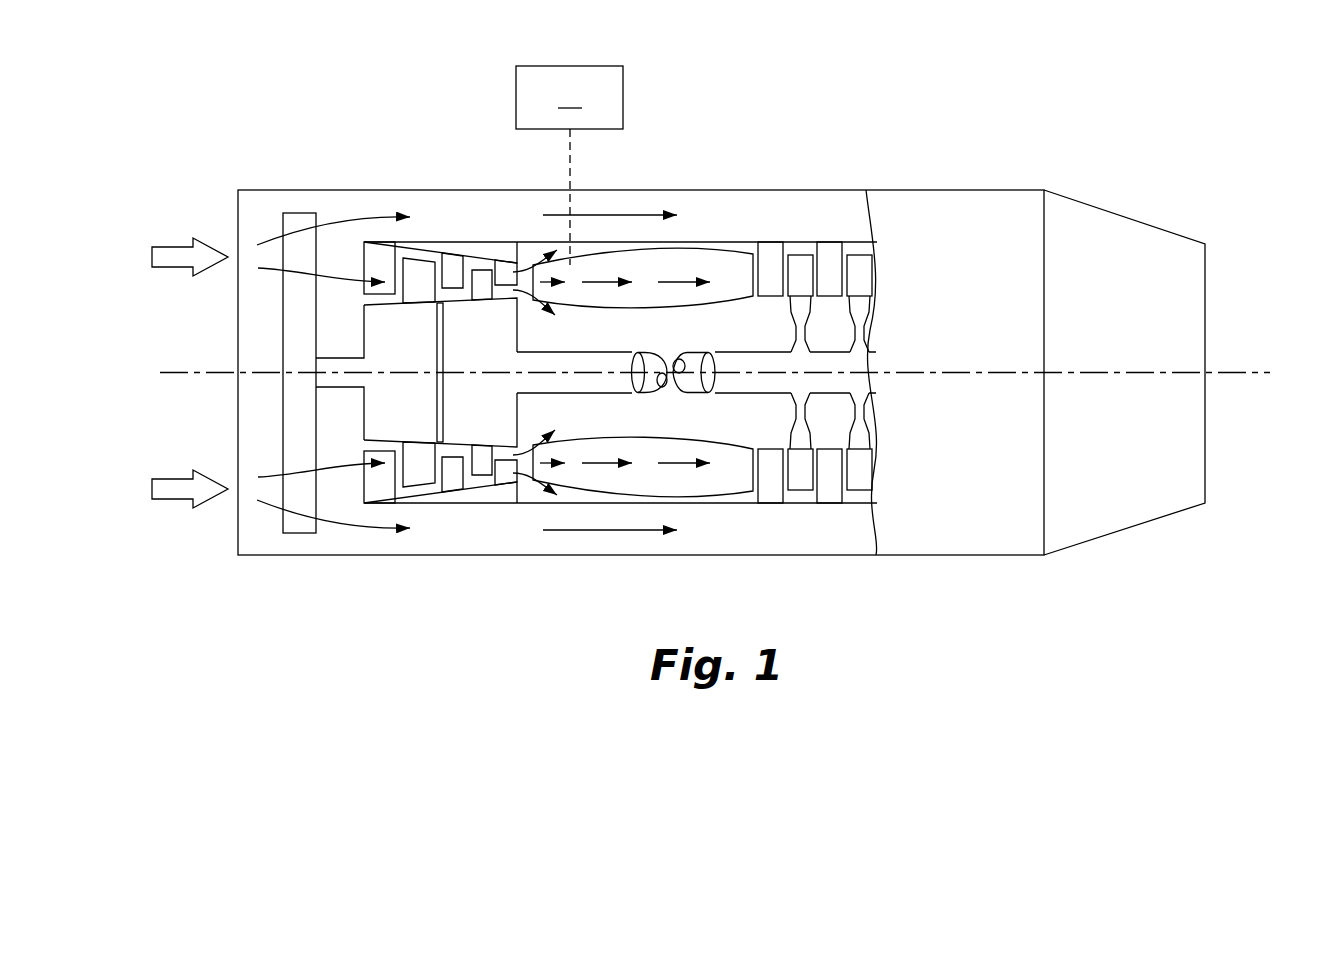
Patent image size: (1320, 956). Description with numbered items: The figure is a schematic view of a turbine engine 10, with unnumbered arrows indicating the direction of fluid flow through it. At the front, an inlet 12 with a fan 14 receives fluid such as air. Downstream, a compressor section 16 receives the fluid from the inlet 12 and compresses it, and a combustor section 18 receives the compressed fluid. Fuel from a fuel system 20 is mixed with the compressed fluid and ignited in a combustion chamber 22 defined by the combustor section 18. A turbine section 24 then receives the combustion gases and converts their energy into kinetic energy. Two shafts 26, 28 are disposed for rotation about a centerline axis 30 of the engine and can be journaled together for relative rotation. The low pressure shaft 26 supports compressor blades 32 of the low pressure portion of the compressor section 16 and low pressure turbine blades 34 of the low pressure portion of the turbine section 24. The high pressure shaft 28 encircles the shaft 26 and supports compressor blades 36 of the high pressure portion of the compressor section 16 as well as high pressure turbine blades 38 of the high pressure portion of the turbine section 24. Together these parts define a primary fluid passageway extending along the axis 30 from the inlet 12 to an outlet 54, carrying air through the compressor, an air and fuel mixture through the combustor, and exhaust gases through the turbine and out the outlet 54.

The turbine engine 10 is at (1049, 137).
The inlet 12 is at (237, 523).
The fan 14 is at (299, 533).
The compressor section 16 is at (458, 515).
The combustor section 18 is at (697, 515).
The fuel system 20 is at (569, 165).
The combustion chamber 22 is at (723, 262).
The turbine section 24 is at (797, 517).
The low pressure shaft 26 is at (332, 363).
The high pressure shaft 28 is at (593, 356).
The centerline axis 30 is at (1236, 371).
The compressor blades 32 is at (423, 273).
The low pressure turbine blades 34 is at (858, 265).
The compressor blades 36 is at (481, 278).
The high pressure turbine blades 38 is at (797, 265).
The outlet 54 is at (1205, 470).